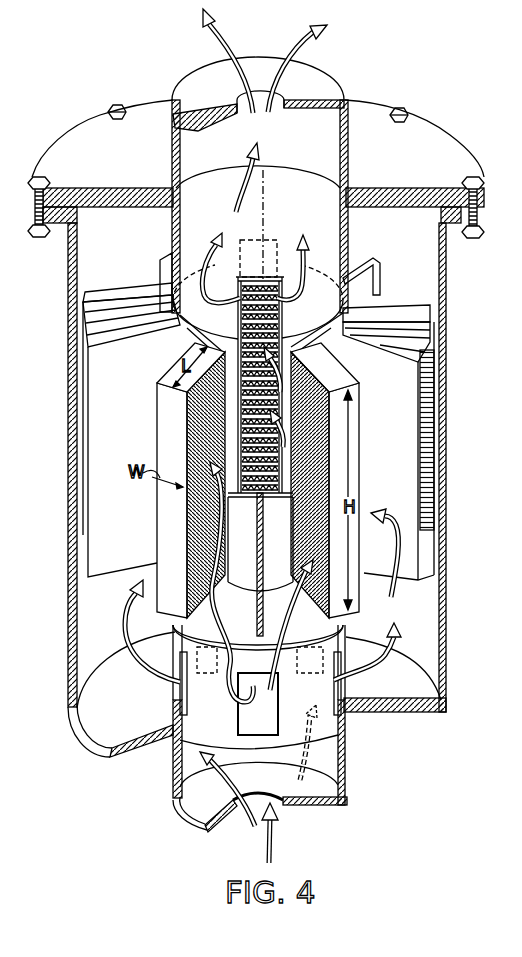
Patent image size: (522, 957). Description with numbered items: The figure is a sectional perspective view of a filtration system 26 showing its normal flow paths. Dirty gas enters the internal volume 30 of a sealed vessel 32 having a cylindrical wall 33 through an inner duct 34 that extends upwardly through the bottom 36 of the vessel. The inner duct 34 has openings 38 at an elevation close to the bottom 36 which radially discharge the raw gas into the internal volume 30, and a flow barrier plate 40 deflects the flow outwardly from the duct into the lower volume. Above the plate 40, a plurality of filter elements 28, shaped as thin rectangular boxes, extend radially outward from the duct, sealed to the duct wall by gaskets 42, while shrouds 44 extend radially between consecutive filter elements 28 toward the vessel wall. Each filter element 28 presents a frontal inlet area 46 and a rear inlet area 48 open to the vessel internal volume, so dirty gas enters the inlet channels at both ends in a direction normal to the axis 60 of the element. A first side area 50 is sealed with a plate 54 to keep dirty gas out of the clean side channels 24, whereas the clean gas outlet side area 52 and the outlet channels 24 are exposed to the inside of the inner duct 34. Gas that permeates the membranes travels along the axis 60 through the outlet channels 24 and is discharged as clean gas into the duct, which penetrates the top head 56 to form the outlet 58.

The clean side channels 24 is at (190, 323).
The filtration system 26 is at (40, 585).
The filter elements 28 is at (361, 495).
The internal volume 30 is at (108, 633).
The sealed vessel 32 is at (431, 552).
The cylindrical wall 33 is at (68, 492).
The inner duct 34 is at (323, 727).
The bottom 36 is at (160, 740).
The openings 38 is at (347, 717).
The flow barrier plate 40 is at (247, 595).
The gaskets 42 is at (305, 237).
The shrouds 44 is at (401, 447).
The frontal inlet area 46 is at (294, 545).
The rear inlet area 48 is at (346, 480).
The first side area 50 is at (390, 476).
The clean gas outlet side area 52 is at (197, 289).
The plate 54 is at (163, 540).
The top head 56 is at (448, 147).
The outlet 58 is at (346, 187).
The axis 60 is at (262, 218).